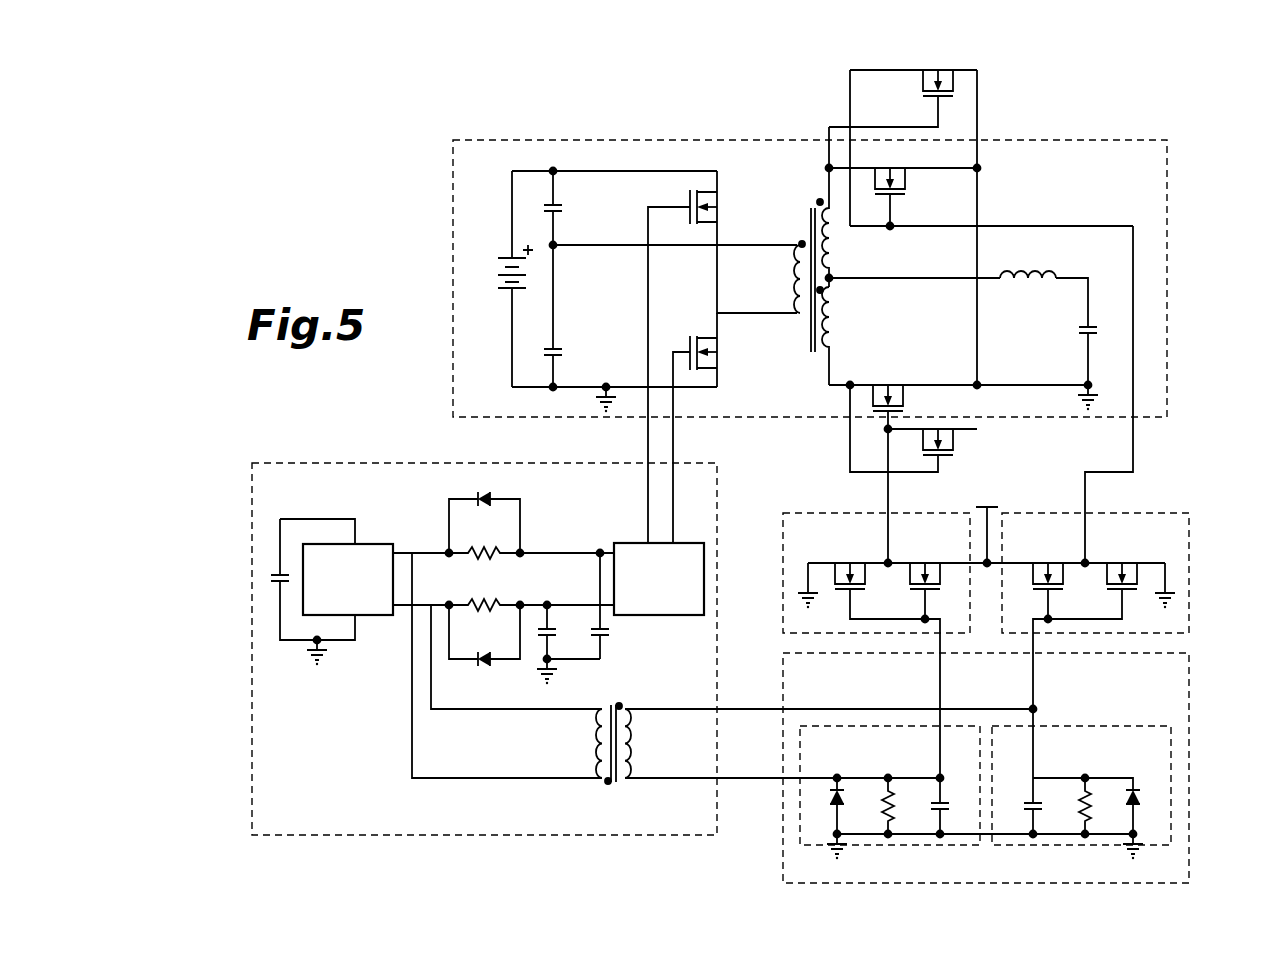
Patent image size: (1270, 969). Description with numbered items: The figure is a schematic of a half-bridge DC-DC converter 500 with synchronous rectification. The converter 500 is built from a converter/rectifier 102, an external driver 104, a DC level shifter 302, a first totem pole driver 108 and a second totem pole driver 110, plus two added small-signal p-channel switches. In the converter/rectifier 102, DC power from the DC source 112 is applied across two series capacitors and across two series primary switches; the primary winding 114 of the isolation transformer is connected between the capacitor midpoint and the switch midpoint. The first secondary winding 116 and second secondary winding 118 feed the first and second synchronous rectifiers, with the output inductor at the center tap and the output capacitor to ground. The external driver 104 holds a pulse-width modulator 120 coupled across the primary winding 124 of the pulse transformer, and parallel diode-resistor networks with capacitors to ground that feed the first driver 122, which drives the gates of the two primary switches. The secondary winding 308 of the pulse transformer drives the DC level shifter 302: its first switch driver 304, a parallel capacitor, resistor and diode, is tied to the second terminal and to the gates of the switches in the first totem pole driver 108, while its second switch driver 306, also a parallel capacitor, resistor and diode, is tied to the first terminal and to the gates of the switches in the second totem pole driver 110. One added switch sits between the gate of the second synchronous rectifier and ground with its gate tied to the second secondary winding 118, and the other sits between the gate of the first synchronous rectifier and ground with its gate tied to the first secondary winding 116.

The half-bridge DC-DC converter 500 is at (372, 236).
The converter/rectifier 102 is at (473, 141).
The external driver 104 is at (276, 464).
The first totem pole driver 108 is at (783, 542).
The second totem pole driver 110 is at (1189, 533).
The DC source 112 is at (497, 297).
The primary winding 114 is at (790, 234).
The first secondary winding 116 is at (810, 201).
The second secondary winding 118 is at (811, 358).
The pulse-width modulator 120 is at (375, 544).
The first driver 122 is at (630, 543).
The primary winding 124 is at (590, 786).
The DC level shifter 302 is at (1190, 678).
The first switch driver 304 is at (800, 764).
The second switch driver 306 is at (1171, 763).
The secondary winding 308 is at (614, 798).